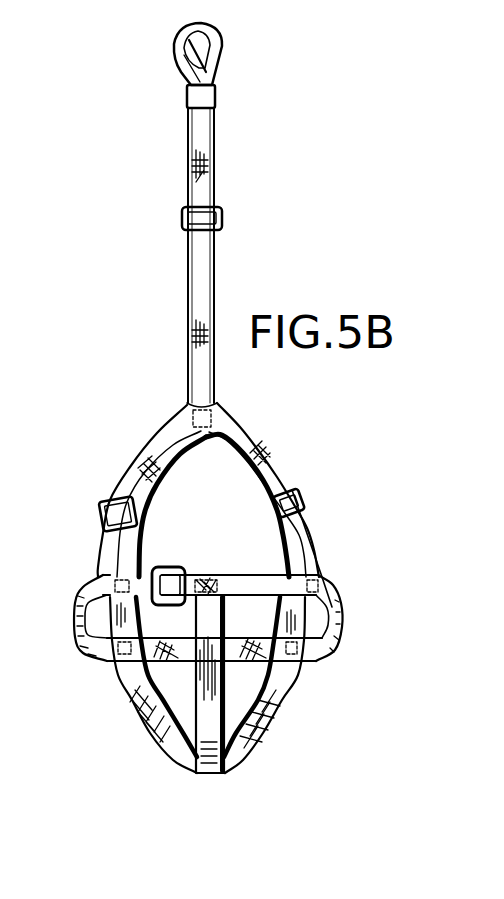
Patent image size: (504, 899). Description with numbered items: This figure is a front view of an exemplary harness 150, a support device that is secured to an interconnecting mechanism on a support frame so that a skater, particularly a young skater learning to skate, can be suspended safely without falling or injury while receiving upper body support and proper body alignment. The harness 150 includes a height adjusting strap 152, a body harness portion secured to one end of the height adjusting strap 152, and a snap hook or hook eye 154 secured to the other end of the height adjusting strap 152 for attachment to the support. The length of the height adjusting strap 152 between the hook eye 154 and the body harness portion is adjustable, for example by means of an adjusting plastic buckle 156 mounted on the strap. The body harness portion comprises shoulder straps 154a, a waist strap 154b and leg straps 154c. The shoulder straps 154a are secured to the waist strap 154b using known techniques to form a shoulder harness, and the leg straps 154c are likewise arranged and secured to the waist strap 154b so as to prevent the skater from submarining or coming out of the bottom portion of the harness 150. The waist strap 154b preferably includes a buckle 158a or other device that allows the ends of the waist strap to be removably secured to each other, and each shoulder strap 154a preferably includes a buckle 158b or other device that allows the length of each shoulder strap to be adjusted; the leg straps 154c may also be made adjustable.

The harness 150 is at (272, 446).
The height adjusting strap 152 is at (207, 157).
The snap hook or hook eye 154 is at (222, 53).
The shoulder straps 154a is at (304, 541).
The waist strap 154b is at (336, 604).
The leg straps 154c is at (285, 700).
The adjusting plastic buckle 156 is at (223, 223).
The buckle 158a is at (170, 566).
The buckle 158b is at (100, 523).